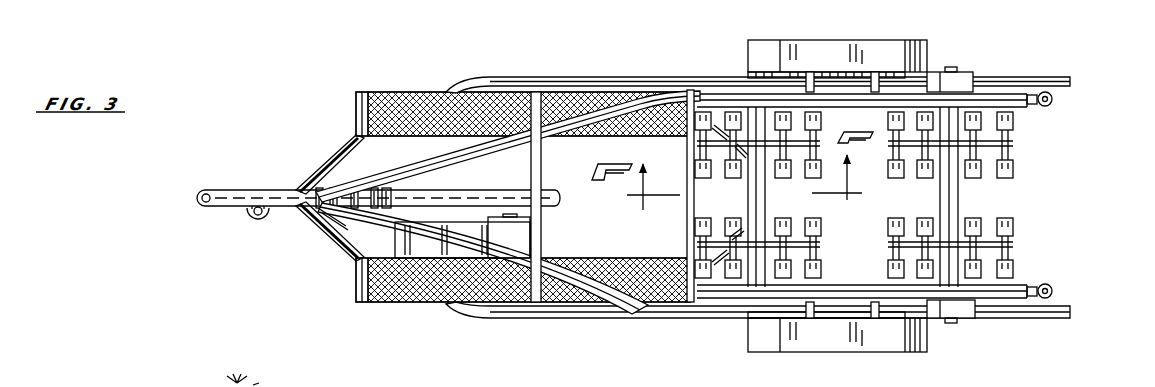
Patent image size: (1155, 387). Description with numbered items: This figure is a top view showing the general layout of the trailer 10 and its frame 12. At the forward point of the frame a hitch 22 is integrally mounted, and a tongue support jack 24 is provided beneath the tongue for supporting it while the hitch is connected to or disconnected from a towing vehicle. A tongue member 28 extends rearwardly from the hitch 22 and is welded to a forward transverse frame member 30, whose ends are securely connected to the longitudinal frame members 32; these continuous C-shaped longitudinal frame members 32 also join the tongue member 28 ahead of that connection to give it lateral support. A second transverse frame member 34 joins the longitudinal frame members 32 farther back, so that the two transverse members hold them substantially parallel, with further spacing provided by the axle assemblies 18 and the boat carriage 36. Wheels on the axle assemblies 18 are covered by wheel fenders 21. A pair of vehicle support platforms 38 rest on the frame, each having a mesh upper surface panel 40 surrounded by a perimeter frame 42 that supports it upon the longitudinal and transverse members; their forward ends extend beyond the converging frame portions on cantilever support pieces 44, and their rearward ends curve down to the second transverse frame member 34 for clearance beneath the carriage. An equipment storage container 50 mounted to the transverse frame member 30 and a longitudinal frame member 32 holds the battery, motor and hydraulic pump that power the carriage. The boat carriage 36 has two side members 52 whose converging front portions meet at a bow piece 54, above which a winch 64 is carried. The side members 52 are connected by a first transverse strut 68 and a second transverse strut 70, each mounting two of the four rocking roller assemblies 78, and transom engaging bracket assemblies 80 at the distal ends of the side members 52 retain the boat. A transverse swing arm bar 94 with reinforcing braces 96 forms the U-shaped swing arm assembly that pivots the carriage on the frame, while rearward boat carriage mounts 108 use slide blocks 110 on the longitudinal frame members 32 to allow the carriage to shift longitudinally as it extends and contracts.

The trailer 10 is at (283, 44).
The frame 12 is at (641, 306).
The axle assemblies 18 is at (897, 187).
The wheel fenders 21 is at (847, 38).
The hitch 22 is at (190, 190).
The tongue support jack 24 is at (254, 221).
The tongue member 28 is at (268, 190).
The forward transverse frame member 30 is at (542, 168).
The longitudinal frame members 32 is at (531, 76).
The second transverse frame member 34 is at (692, 178).
The boat carriage 36 is at (440, 161).
The vehicle support platforms 38 is at (330, 94).
The mesh upper surface panels 40 is at (389, 92).
The perimeter frames 42 is at (418, 92).
The cantilever support pieces 44 is at (352, 142).
The equipment storage container 50 is at (545, 236).
The side members 52 is at (465, 158).
The bow piece 54 is at (388, 190).
The winch 64 is at (332, 222).
The first transverse strut 68 is at (755, 110).
The second transverse strut 70 is at (968, 110).
The roller assemblies 78 is at (886, 118).
The transom engaging bracket assemblies 80 is at (1060, 100).
The transverse swing arm bar 94 is at (750, 200).
The reinforcing braces 96 is at (722, 125).
The rearward boat carriage mounts 108 is at (957, 64).
The slide blocks 110 is at (938, 70).